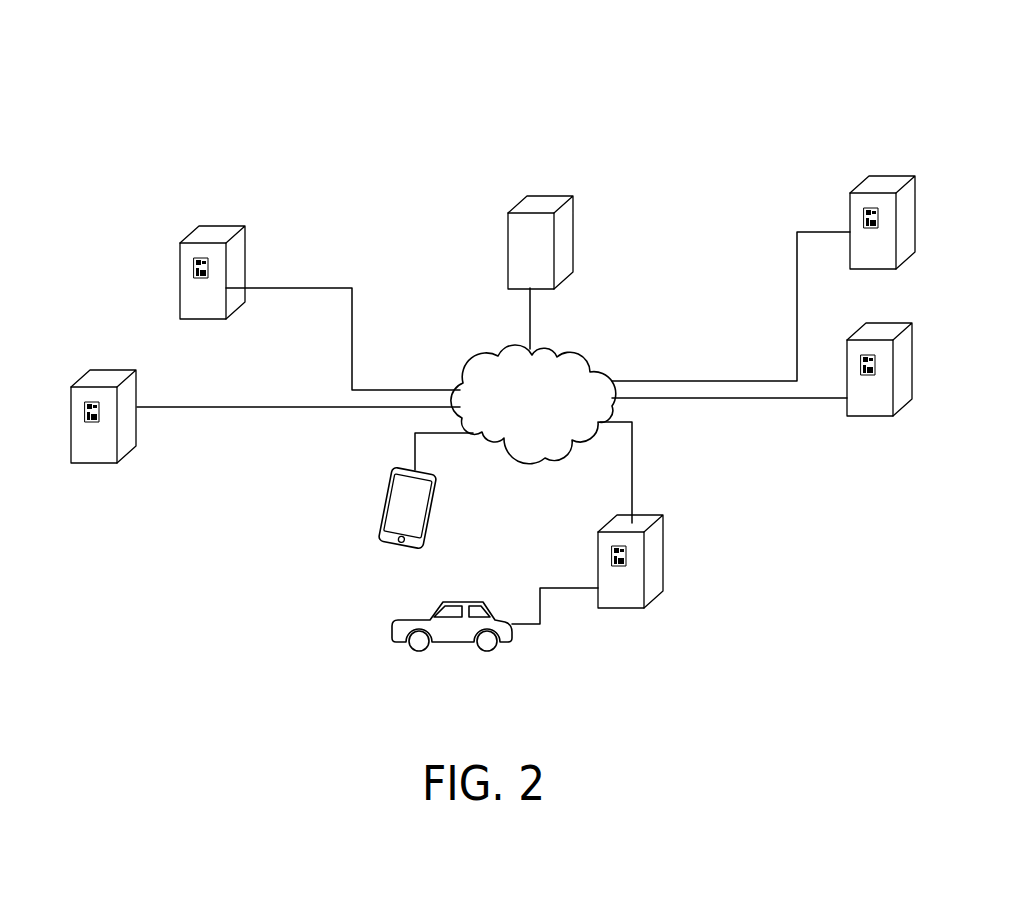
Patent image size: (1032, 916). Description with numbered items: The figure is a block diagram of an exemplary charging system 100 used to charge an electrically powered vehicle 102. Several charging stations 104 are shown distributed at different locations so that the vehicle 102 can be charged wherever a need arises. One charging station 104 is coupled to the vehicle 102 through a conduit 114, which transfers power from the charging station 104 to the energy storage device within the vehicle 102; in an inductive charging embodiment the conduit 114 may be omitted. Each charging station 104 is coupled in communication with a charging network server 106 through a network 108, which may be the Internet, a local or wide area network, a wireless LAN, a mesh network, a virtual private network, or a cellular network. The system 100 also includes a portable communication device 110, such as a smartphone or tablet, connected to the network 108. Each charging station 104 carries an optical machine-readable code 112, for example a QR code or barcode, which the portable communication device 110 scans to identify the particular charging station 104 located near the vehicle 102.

The charging system 100 is at (808, 104).
The electrically powered vehicle 102 is at (413, 617).
The charging station 104 is at (206, 226).
The charging network server 106 is at (534, 196).
The network 108 is at (551, 417).
The portable communication device 110 is at (386, 501).
The optical machine-readable code 112 is at (627, 556).
The conduit 114 is at (540, 616).